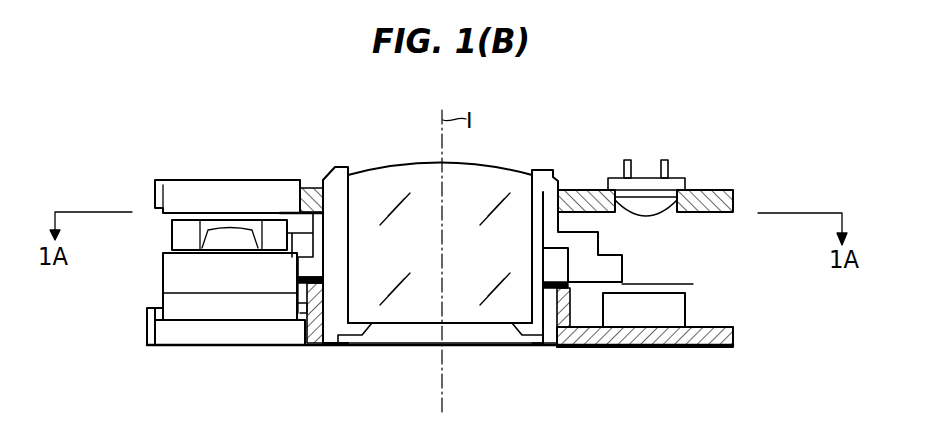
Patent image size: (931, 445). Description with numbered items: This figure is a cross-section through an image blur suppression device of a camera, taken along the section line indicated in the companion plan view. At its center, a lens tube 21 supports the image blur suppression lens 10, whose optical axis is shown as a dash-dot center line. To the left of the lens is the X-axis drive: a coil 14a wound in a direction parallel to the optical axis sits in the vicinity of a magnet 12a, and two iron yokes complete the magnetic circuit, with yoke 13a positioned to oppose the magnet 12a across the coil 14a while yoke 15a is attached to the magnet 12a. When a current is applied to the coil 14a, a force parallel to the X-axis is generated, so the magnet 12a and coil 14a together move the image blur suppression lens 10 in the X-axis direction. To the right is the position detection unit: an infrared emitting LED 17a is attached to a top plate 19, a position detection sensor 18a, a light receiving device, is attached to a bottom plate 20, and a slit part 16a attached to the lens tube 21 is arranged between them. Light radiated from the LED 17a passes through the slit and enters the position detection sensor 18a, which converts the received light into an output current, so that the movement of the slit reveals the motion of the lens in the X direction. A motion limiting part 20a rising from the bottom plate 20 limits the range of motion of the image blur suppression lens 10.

The image blur suppression lens 10 is at (475, 185).
The lens tube 21 is at (548, 188).
The yoke 13a is at (221, 197).
The coil 14a is at (180, 237).
The magnet 12a is at (185, 270).
The yoke 15a is at (232, 308).
The slit part 16a is at (690, 275).
The LED 17a is at (638, 193).
The position detection sensor 18a is at (668, 312).
The top plate 19 is at (723, 213).
The bottom plate 20 is at (720, 340).
The motion limiting part 20a is at (568, 294).